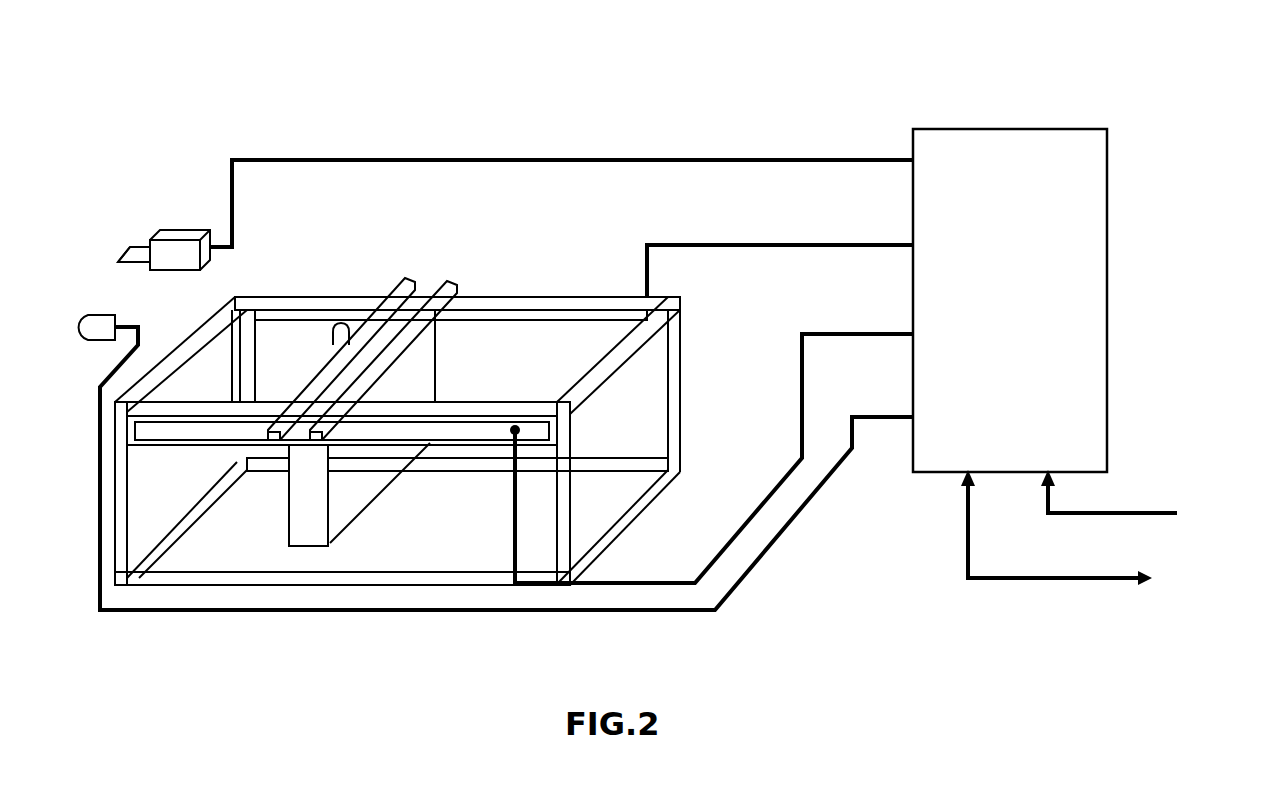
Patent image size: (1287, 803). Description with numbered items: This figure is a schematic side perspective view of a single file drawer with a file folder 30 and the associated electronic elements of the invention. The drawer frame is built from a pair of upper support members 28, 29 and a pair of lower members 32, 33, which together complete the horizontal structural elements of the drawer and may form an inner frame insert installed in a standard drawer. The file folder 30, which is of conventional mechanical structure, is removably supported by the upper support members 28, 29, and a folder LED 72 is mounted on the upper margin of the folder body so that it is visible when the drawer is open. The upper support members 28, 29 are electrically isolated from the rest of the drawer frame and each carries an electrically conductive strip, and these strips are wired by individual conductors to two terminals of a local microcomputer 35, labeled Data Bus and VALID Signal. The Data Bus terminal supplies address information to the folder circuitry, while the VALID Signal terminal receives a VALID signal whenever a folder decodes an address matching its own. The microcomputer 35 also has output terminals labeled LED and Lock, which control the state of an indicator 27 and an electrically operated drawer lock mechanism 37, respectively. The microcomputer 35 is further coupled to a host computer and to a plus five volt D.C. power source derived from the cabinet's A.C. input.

The indicator 27 is at (93, 325).
The upper support member 28 is at (250, 402).
The upper support member 29 is at (357, 297).
The file folder 30 is at (410, 360).
The lower member 32 is at (440, 578).
The lower member 33 is at (478, 470).
The local microcomputer 35 is at (1000, 130).
The electrically operated drawer lock mechanism 37 is at (175, 250).
The folder LED 72 is at (336, 333).